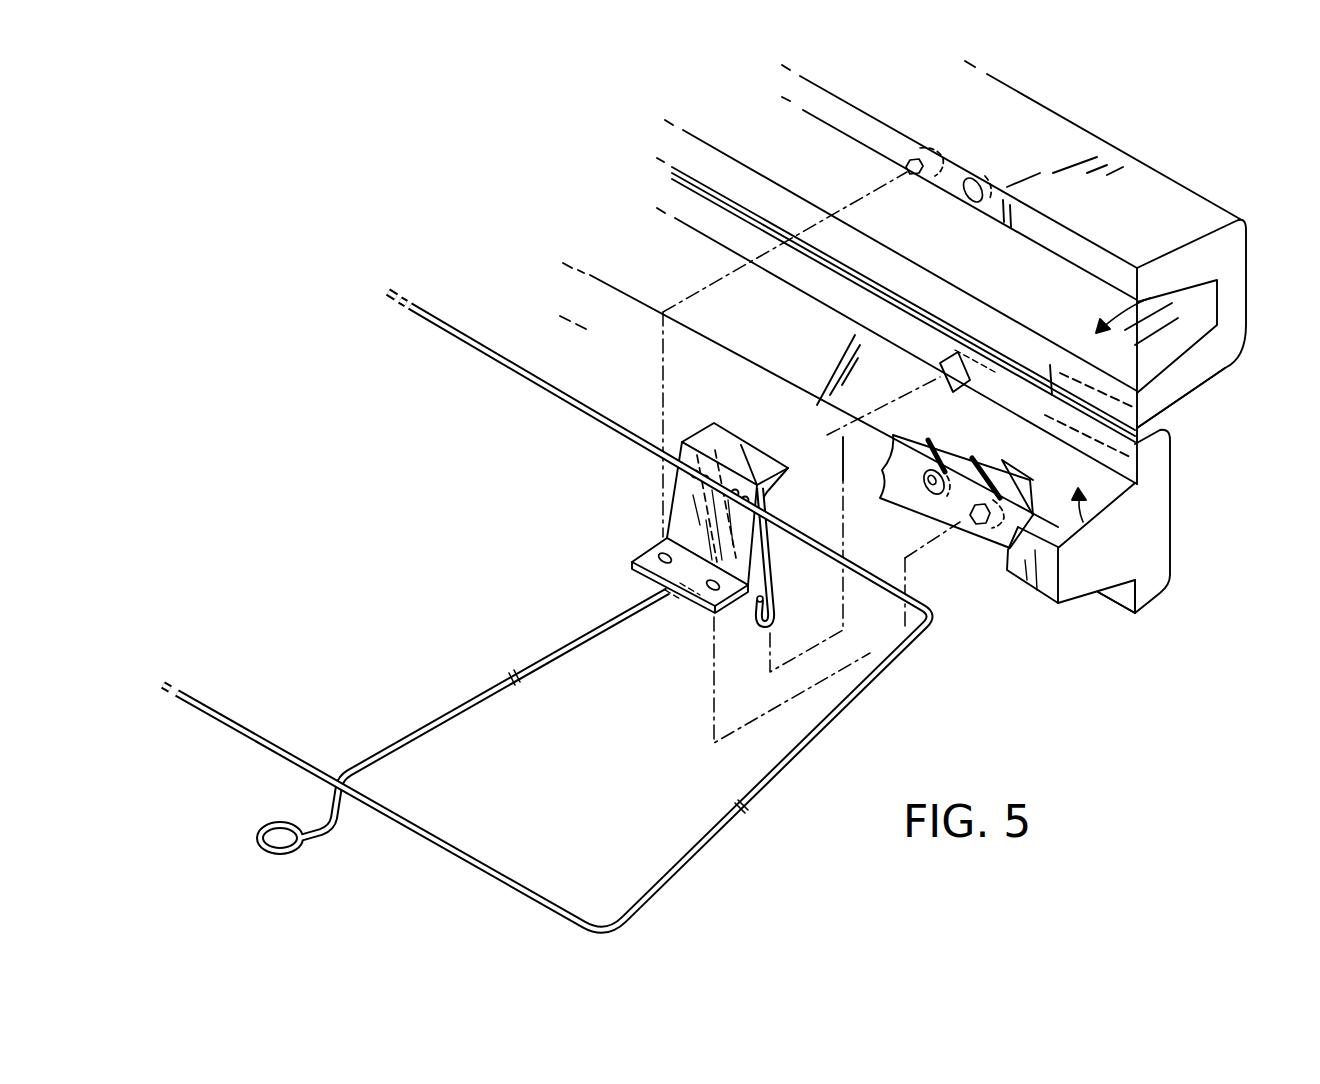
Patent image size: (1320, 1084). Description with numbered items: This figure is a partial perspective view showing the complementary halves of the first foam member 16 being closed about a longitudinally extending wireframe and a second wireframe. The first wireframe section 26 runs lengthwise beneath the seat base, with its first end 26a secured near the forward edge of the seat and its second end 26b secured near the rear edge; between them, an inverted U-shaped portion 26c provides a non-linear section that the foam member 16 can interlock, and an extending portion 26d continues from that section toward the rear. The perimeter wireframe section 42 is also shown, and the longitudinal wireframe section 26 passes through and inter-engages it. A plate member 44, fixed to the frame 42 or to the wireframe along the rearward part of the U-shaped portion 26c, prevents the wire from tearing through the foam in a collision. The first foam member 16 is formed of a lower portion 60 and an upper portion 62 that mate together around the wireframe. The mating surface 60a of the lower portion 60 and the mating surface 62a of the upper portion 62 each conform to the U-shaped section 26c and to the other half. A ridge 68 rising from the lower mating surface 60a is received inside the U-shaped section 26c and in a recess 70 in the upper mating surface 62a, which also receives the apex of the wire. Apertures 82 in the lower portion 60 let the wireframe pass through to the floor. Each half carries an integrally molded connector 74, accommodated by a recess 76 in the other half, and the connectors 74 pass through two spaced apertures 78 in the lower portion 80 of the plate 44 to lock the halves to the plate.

The first foam member 16 is at (1145, 165).
The first wireframe section 26 is at (578, 655).
The first end 26a is at (778, 617).
The second end 26b is at (282, 852).
The inverted U-shaped portion 26c is at (740, 440).
The extending portion 26d is at (474, 706).
The wireframe section 42 is at (518, 378).
The plate member 44 is at (664, 508).
The lower portion 60 is at (1153, 537).
The mating surface 60a is at (1118, 595).
The upper portion 62 is at (1213, 245).
The mating surface 62a is at (1043, 233).
The ridge 68 is at (1037, 582).
The recess 70 is at (1180, 335).
The integrally molded connector 74 is at (913, 176).
The recess 76 is at (971, 203).
The apertures 78 is at (665, 563).
The lower portion of the plate 80 is at (640, 554).
The apertures 82 is at (955, 380).